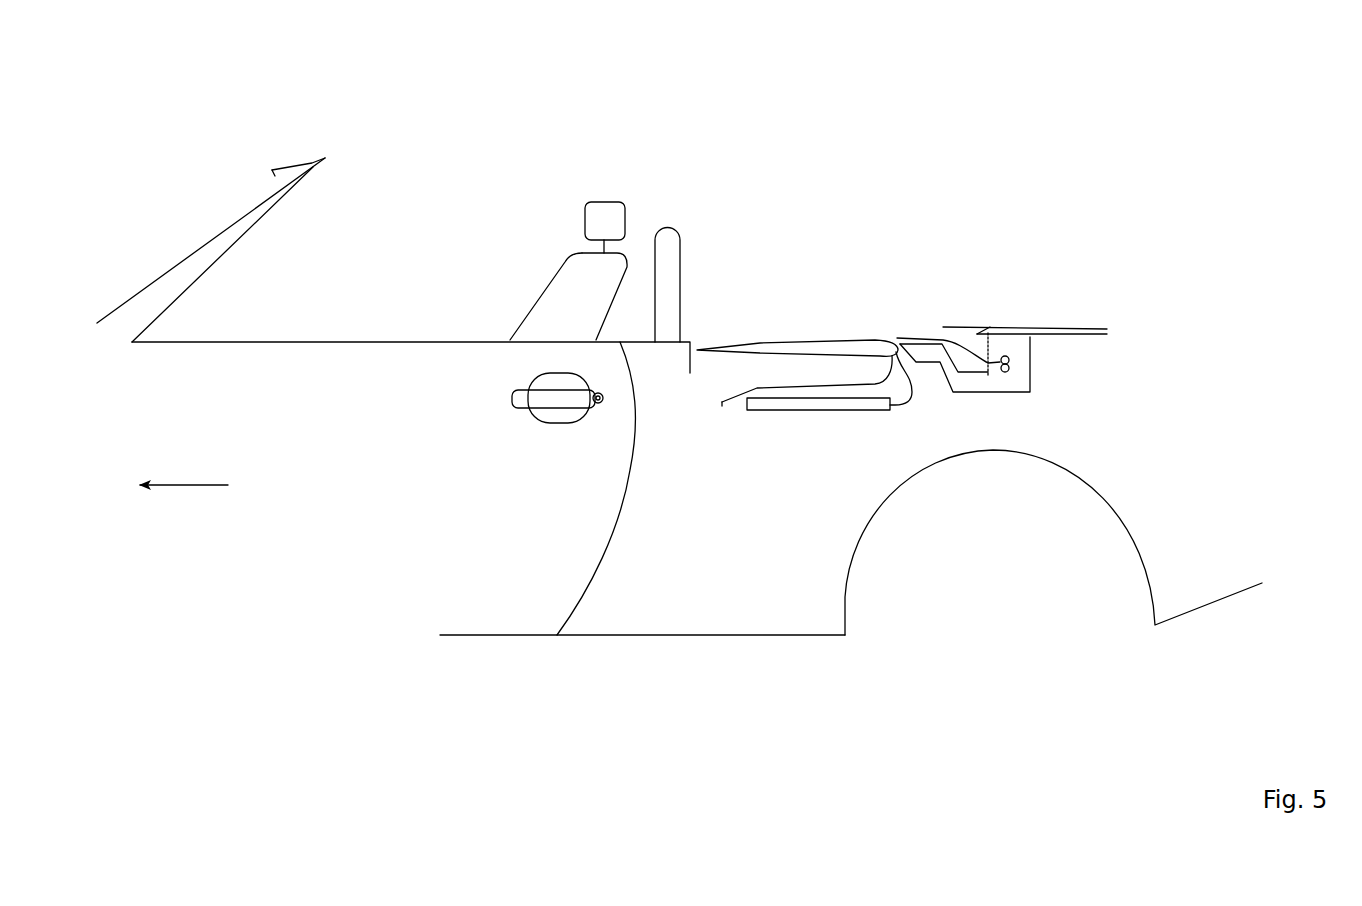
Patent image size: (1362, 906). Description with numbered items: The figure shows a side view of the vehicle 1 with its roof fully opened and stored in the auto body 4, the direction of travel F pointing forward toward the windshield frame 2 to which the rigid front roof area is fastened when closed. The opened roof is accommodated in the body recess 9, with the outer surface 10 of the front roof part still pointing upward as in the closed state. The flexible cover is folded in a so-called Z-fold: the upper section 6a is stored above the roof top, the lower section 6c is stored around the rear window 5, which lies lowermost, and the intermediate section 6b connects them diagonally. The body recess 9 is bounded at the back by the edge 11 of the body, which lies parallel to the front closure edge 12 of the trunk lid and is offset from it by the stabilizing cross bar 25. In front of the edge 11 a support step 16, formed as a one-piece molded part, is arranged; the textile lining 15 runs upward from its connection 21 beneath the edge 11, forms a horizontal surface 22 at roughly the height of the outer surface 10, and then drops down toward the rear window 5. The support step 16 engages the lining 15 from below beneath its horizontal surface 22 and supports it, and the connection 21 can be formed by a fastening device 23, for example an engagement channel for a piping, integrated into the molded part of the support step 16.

The vehicle 1 is at (947, 127).
The windshield frame 2 is at (319, 161).
The auto body 4 is at (791, 494).
The rear window 5 is at (850, 411).
The upper section 6a is at (849, 340).
The intermediate section 6b is at (820, 383).
The lower section 6c is at (722, 406).
The body recess 9 is at (712, 366).
The surface 10 is at (791, 335).
The edge 11 is at (942, 327).
The front closure edge 12 is at (1051, 325).
The lining 15 is at (928, 338).
The support step 16 is at (928, 350).
The connection 21 is at (1020, 379).
The horizontal surface 22 is at (910, 334).
The fastening device 23 is at (1013, 351).
The stabilizing cross bar 25 is at (1001, 324).
The direction of travel F is at (183, 485).